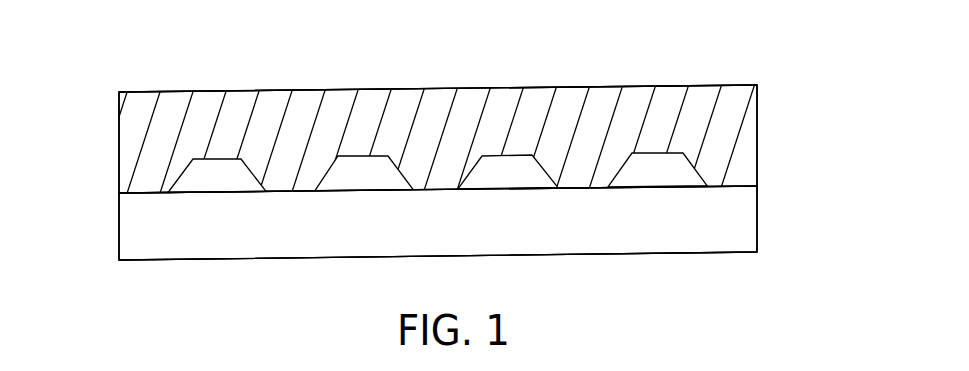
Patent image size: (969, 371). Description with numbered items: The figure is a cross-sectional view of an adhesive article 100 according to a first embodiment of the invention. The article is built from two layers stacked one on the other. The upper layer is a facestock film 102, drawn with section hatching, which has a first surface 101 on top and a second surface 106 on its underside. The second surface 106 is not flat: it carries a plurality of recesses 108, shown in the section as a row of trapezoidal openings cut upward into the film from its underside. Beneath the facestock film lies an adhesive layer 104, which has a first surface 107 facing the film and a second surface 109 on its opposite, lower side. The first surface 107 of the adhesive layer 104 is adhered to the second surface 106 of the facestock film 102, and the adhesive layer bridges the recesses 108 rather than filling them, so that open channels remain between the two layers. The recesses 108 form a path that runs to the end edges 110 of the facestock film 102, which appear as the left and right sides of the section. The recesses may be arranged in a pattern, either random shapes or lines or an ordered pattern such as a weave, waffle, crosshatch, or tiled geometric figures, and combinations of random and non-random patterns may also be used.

The adhesive article 100 is at (152, 68).
The first surface 101 is at (607, 85).
The facestock film 102 is at (717, 127).
The adhesive layer 104 is at (735, 210).
The second surface 106 is at (153, 194).
The first surface 107 is at (142, 192).
The recesses 108 is at (658, 173).
The second surface 109 is at (148, 262).
The end edges 110 is at (118, 122).